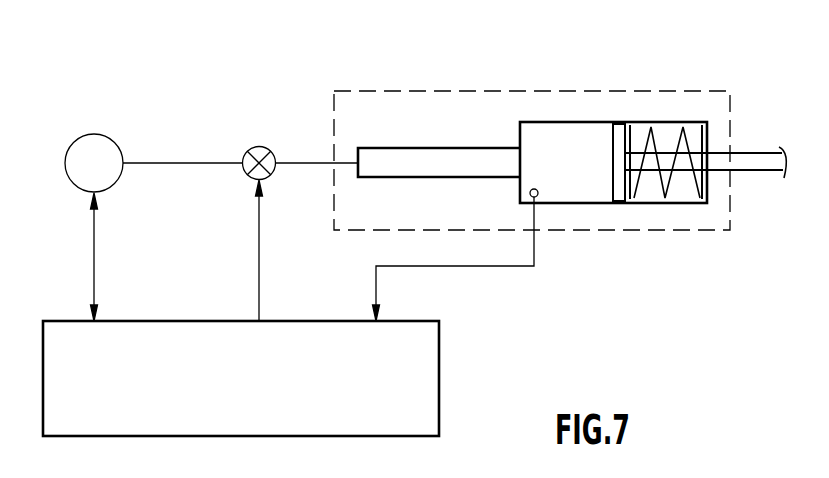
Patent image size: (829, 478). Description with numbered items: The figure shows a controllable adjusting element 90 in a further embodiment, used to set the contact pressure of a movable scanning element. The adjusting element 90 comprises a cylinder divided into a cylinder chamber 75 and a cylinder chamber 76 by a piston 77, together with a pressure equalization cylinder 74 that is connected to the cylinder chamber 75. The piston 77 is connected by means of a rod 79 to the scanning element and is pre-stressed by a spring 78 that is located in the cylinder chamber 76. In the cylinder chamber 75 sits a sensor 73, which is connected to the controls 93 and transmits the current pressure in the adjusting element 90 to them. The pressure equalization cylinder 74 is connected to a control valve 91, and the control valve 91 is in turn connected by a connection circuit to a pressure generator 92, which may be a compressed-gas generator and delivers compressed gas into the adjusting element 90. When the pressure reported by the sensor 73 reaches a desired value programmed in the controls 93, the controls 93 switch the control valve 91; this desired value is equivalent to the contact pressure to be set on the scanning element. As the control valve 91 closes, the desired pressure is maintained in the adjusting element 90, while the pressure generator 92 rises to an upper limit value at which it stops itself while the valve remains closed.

The sensor 73 is at (538, 196).
The pressure equalization cylinder 74 is at (425, 158).
The cylinder chamber 75 is at (548, 135).
The cylinder chamber 76 is at (668, 128).
The piston 77 is at (619, 130).
The spring 78 is at (668, 185).
The rod 79 is at (758, 170).
The controllable adjusting element 90 is at (350, 92).
The control valve 91 is at (259, 147).
The pressure generator 92 is at (91, 135).
The controls 93 is at (413, 373).